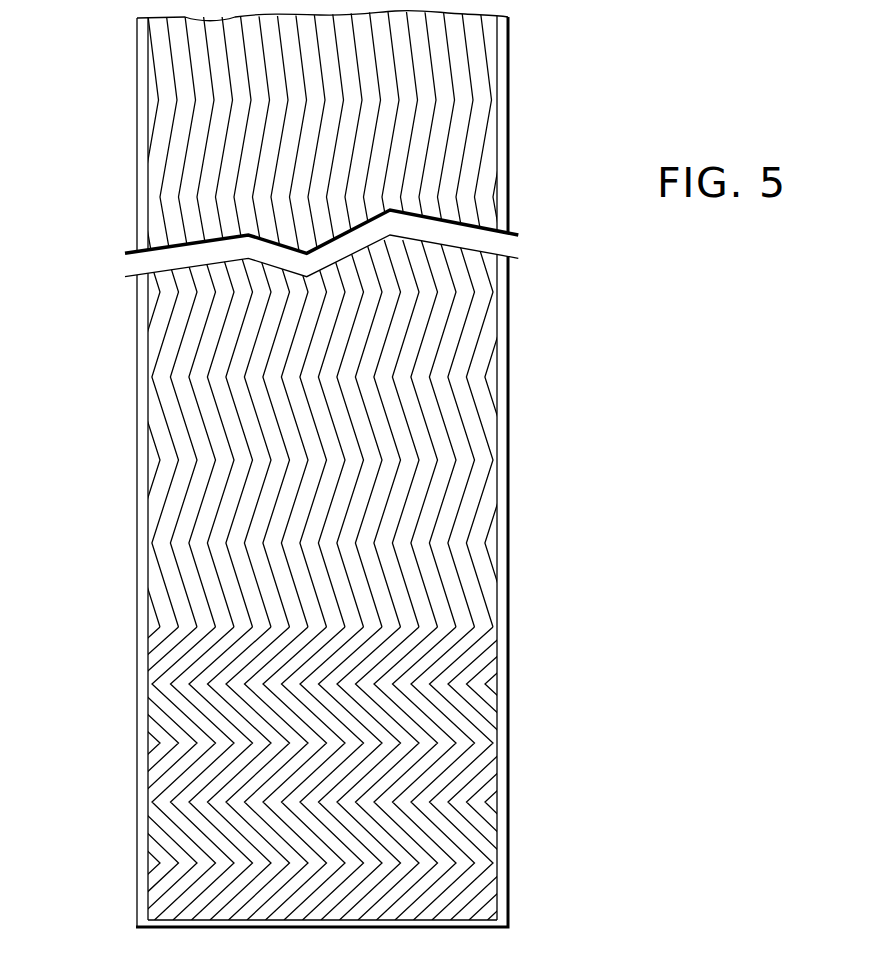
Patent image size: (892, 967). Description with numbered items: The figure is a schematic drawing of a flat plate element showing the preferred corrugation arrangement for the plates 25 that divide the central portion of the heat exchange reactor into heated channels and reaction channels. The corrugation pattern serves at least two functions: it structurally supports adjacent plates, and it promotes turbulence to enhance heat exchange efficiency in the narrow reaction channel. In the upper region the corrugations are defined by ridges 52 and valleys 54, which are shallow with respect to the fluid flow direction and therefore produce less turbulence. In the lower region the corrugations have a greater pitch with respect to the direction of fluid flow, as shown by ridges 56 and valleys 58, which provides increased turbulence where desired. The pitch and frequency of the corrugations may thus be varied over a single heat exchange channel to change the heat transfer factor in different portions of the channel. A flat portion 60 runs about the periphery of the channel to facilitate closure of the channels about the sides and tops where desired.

The plate 25 is at (128, 509).
The ridges 52 is at (205, 55).
The valleys 54 is at (445, 103).
The ridges 56 is at (468, 750).
The valleys 58 is at (370, 704).
The flat portion 60 is at (498, 549).